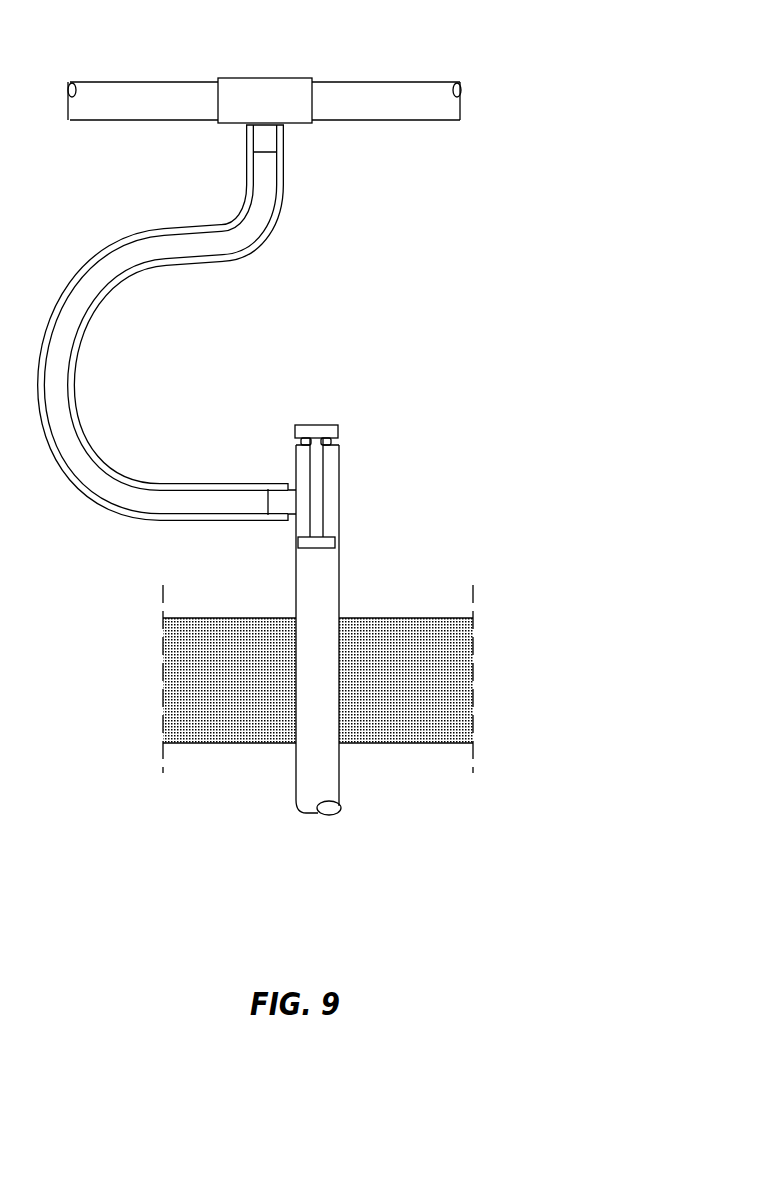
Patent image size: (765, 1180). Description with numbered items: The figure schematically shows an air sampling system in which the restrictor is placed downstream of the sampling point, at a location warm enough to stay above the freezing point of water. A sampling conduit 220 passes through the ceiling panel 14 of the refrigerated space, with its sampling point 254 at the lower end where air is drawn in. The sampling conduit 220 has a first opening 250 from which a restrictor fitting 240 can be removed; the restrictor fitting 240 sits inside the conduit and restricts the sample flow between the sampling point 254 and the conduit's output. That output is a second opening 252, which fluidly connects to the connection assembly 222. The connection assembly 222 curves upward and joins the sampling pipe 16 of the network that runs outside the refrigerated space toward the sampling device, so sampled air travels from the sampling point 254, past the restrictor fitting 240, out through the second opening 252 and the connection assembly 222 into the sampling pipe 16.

The sampling pipe 16 is at (387, 88).
The connection assembly 222 is at (233, 483).
The second opening 252 is at (266, 500).
The first opening 250 is at (343, 442).
The restrictor fitting 240 is at (328, 491).
The sampling conduit 220 is at (342, 572).
The ceiling panel 14 is at (485, 677).
The sampling point 254 is at (343, 810).